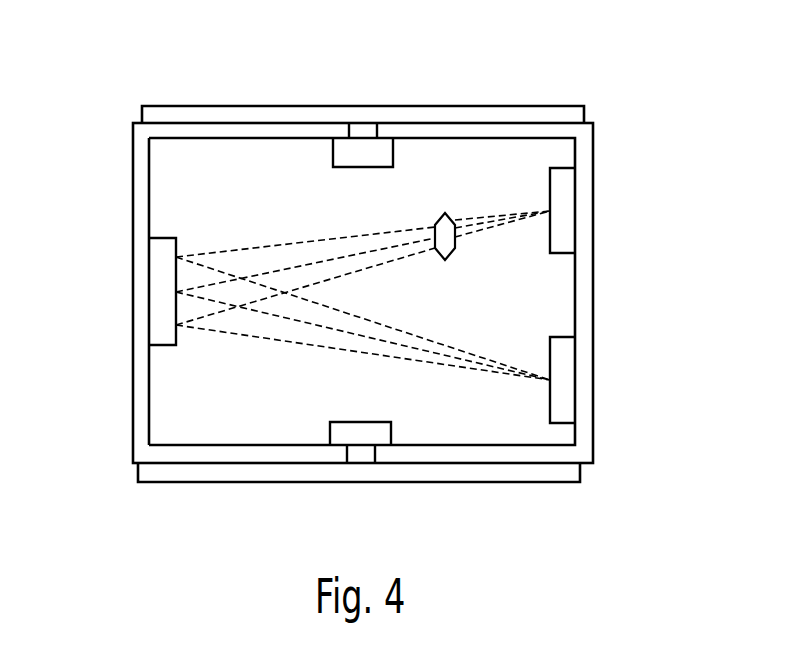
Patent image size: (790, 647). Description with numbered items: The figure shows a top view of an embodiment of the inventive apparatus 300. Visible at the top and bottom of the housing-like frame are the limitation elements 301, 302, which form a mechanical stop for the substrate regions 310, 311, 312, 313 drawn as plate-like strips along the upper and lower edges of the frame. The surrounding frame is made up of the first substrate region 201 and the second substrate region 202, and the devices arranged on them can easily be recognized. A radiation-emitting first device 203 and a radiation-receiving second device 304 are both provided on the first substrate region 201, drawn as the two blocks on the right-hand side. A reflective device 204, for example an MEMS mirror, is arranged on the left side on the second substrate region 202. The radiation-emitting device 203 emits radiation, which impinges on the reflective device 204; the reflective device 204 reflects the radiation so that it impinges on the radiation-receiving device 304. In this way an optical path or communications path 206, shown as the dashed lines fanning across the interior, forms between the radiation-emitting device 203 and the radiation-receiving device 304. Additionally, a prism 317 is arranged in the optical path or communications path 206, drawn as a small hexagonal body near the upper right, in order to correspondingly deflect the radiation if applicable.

The apparatus 300 is at (143, 75).
The first substrate region 201 is at (587, 300).
The second substrate region 202 is at (143, 352).
The radiation-emitting first device 203 is at (567, 380).
The reflective device 204 is at (162, 290).
The optical path 206 is at (265, 238).
The limitation element 301 is at (357, 425).
The limitation element 302 is at (383, 152).
The radiation-receiving second device 304 is at (568, 237).
The substrate region 310 is at (206, 450).
The substrate region 311 is at (487, 455).
The substrate region 312 is at (280, 133).
The substrate region 313 is at (510, 133).
The prism 317 is at (438, 218).